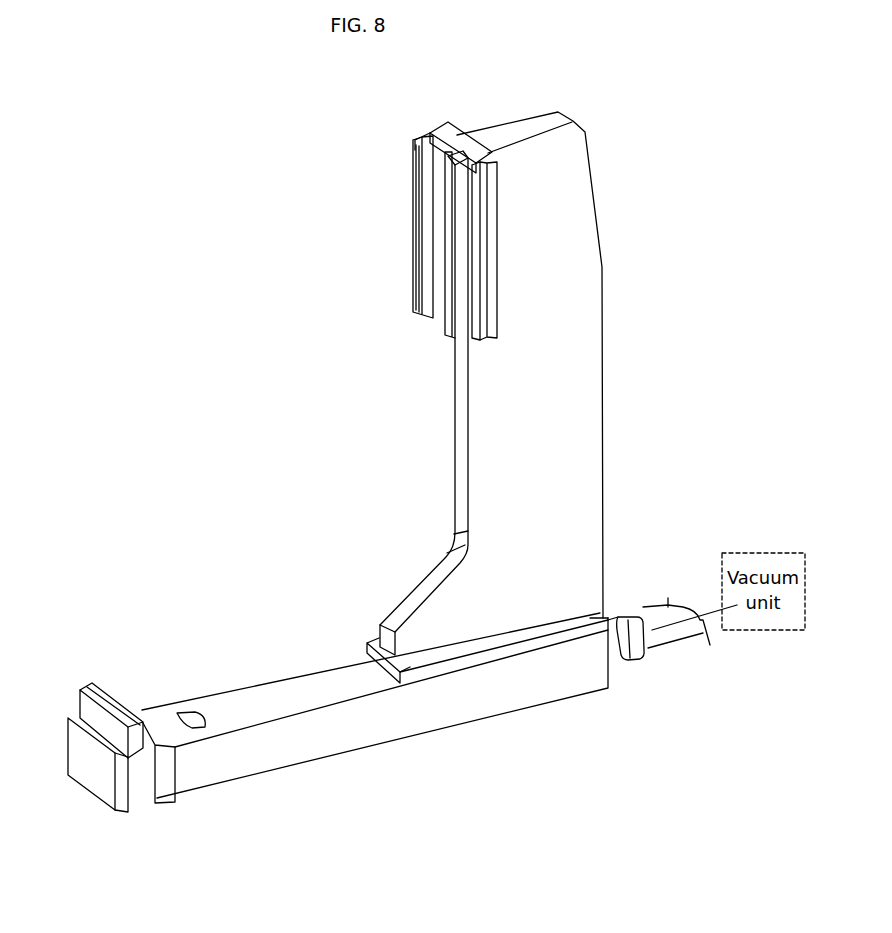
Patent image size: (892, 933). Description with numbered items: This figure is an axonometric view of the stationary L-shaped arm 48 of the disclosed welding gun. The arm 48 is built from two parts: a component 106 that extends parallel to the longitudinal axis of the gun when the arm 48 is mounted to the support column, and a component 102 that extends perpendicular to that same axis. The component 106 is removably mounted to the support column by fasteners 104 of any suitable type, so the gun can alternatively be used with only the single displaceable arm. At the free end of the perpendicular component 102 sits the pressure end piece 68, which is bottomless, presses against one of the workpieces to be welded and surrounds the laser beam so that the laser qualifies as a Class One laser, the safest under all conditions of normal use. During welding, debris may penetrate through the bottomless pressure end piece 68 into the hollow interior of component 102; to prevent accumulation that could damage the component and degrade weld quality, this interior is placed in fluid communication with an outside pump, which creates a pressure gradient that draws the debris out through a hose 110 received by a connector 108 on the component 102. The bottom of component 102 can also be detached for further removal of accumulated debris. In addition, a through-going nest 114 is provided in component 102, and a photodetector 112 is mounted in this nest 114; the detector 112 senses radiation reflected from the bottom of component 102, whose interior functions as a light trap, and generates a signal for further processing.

The stationary L-shaped arm 48 is at (404, 388).
The pressure end piece 68 is at (95, 720).
The component 102 is at (506, 719).
The fasteners 104 is at (413, 233).
The component 106 is at (587, 465).
The connector 108 is at (617, 647).
The hose 110 is at (680, 623).
The photodetector 112 is at (192, 713).
The through-going nest 114 is at (293, 750).